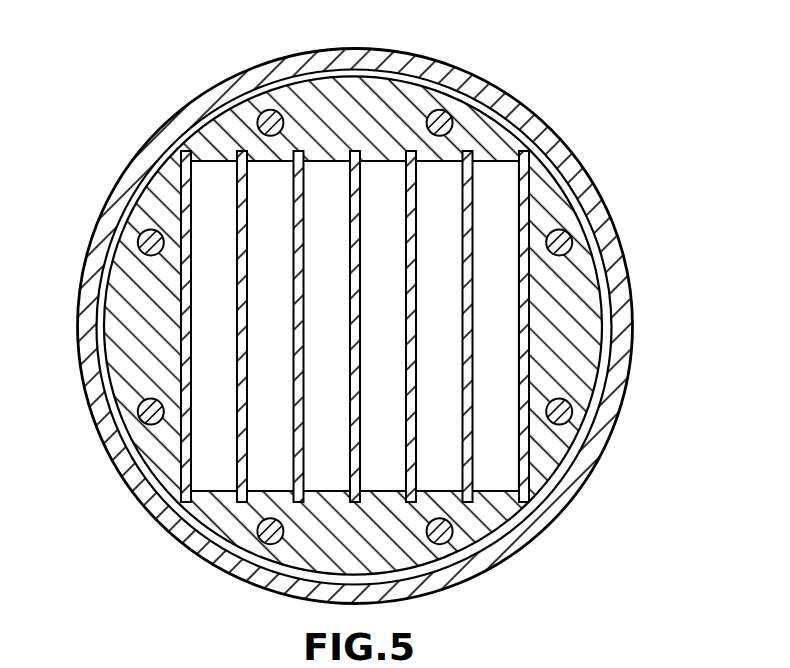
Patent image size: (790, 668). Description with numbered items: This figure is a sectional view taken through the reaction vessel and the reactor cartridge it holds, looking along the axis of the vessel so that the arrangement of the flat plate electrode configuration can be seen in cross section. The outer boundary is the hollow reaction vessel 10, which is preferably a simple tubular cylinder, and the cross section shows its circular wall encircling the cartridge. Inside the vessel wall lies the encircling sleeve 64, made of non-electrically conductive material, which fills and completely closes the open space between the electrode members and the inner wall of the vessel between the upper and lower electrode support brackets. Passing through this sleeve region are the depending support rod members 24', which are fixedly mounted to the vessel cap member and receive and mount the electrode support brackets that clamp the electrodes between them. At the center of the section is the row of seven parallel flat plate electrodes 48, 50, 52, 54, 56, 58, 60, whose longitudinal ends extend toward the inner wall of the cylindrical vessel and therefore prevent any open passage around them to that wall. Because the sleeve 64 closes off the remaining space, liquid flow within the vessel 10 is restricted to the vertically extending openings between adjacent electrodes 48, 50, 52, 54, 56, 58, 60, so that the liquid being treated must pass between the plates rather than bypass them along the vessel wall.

The reaction vessel 10 is at (518, 101).
The support rod members 24' is at (360, 327).
The flat plate electrode 48 is at (192, 457).
The flat plate electrode 50 is at (237, 361).
The flat plate electrode 52 is at (293, 361).
The flat plate electrode 54 is at (350, 361).
The flat plate electrode 56 is at (406, 361).
The flat plate electrode 58 is at (462, 361).
The flat plate electrode 60 is at (519, 361).
The encircling sleeve 64 is at (590, 330).